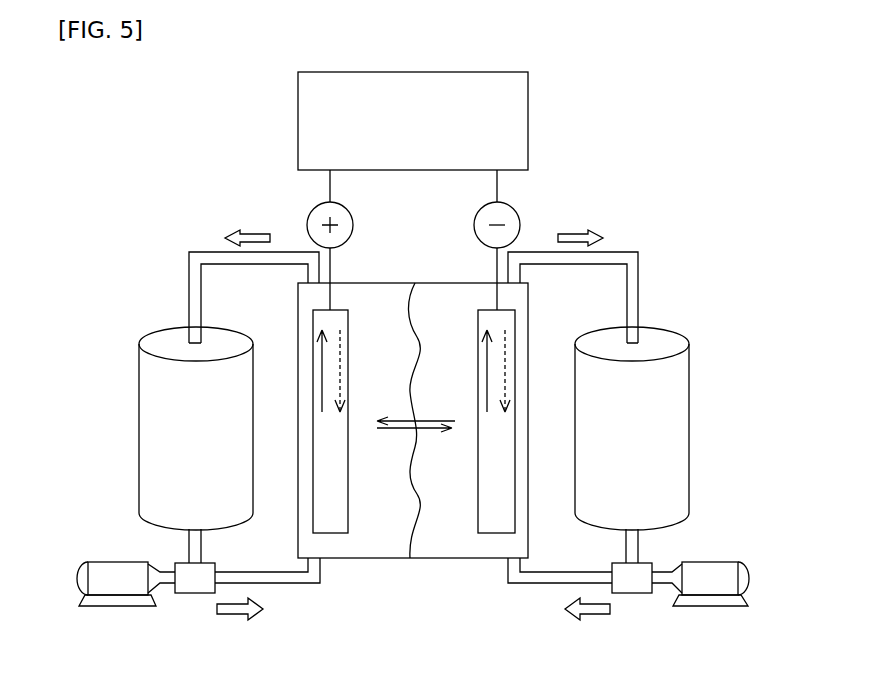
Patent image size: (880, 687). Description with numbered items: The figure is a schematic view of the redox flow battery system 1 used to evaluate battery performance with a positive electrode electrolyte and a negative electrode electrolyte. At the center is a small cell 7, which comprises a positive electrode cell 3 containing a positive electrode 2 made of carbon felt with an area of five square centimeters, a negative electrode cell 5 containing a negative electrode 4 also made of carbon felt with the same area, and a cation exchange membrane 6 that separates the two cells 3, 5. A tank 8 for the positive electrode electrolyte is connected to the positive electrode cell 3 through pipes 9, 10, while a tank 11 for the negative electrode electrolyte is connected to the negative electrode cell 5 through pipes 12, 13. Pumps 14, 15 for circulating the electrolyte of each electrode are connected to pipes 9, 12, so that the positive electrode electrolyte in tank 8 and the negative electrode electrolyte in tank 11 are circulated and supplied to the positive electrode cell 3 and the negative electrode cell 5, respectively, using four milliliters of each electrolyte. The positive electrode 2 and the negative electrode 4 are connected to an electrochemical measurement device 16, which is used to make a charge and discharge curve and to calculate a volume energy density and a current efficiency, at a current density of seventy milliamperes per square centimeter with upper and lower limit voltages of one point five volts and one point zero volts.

The redox flow battery system 1 is at (592, 152).
The positive electrode 2 is at (315, 347).
The positive electrode cell 3 is at (372, 558).
The negative electrode 4 is at (514, 355).
The negative electrode cell 5 is at (462, 558).
The cation exchange membrane 6 is at (415, 310).
The small cell 7 is at (370, 620).
The tank for a positive electrode electrolyte 8 is at (139, 452).
The pipe 9 is at (292, 583).
The pipe 10 is at (210, 252).
The tank for a negative electrode electrolyte 11 is at (689, 428).
The pipe 12 is at (545, 583).
The pipe 13 is at (612, 252).
The pump 14 is at (120, 606).
The pump 15 is at (715, 606).
The electrochemical measurement device 16 is at (298, 130).